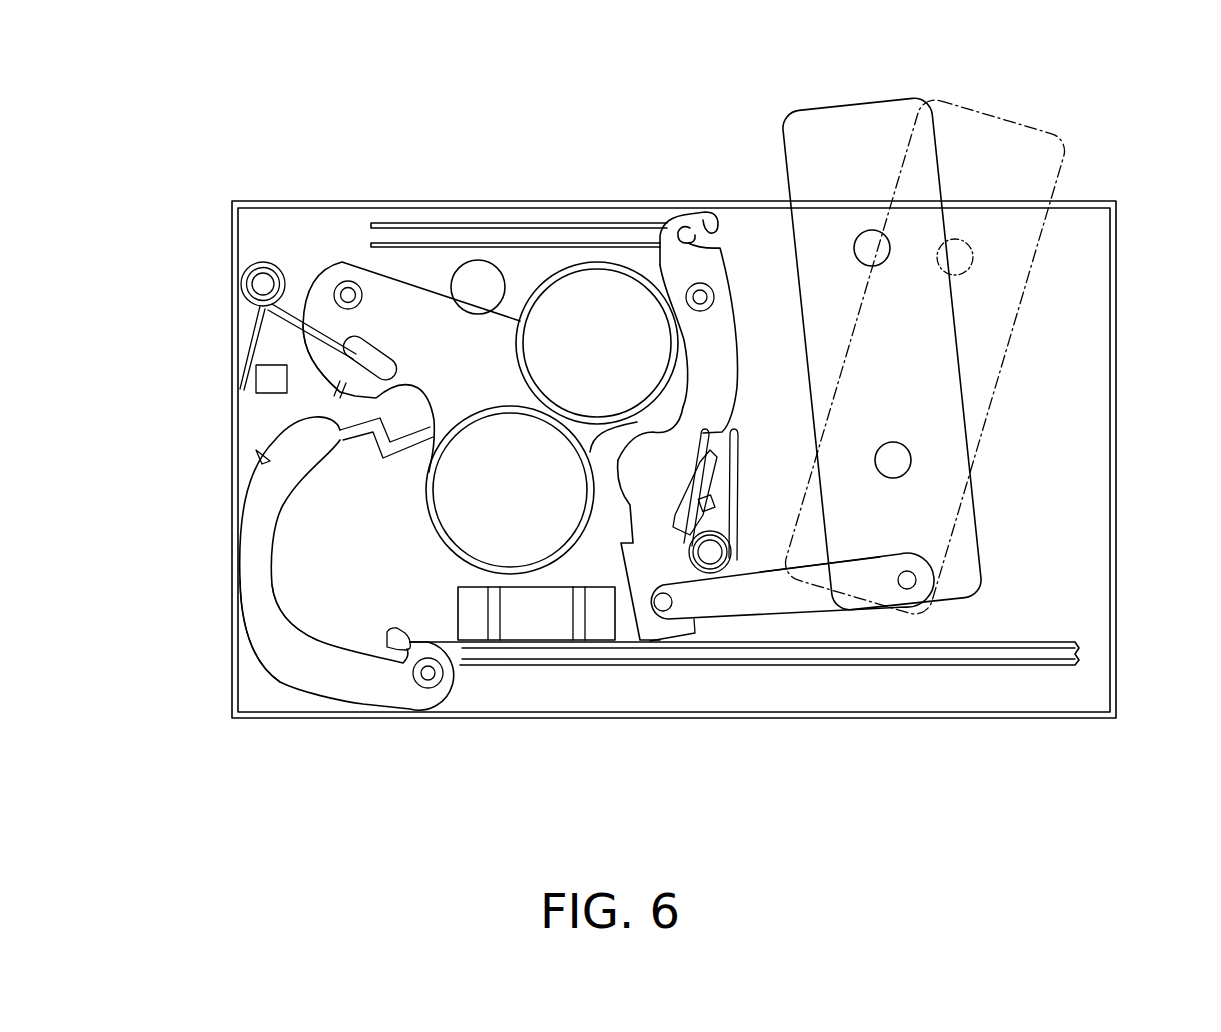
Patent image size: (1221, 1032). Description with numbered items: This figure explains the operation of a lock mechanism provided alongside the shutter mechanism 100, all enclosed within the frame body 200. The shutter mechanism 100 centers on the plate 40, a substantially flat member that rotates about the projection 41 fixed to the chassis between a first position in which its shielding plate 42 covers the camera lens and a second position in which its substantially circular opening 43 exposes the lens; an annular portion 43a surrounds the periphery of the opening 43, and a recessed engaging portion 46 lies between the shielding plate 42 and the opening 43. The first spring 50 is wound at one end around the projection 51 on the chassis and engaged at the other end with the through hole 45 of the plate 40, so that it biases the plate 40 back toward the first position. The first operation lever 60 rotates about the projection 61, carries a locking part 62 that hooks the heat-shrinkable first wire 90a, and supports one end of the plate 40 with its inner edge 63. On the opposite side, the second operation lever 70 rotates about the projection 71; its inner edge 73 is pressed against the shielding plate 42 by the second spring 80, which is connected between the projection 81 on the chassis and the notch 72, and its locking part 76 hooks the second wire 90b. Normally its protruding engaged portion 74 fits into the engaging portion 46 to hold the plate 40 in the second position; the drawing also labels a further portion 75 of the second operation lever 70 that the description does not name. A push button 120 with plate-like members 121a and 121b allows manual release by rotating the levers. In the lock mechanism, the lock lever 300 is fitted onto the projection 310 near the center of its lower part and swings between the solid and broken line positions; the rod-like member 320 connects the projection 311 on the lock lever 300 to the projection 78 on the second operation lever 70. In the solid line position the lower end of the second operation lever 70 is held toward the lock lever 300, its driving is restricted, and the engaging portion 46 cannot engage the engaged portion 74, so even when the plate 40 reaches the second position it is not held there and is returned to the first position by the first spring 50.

The shutter mechanism 100 is at (178, 111).
The frame body 200 is at (1117, 715).
The lock lever 300 is at (920, 319).
The projection 310 is at (895, 460).
The projection 311 is at (907, 592).
The rod-like member 320 is at (740, 600).
The plate 40 is at (411, 351).
The projection 41 is at (347, 282).
The shielding plate 42 is at (573, 363).
The opening 43 is at (514, 412).
The annular portion 43a is at (490, 500).
The through hole 45 is at (355, 360).
The engaging portion 46 is at (487, 553).
The first spring 50 is at (234, 300).
The projection 51 is at (262, 284).
The first operation lever 60 is at (294, 609).
The projection 61 is at (423, 682).
The locking part 62 is at (390, 640).
The inner edge 63 is at (438, 548).
The second operation lever 70 is at (709, 433).
The projection 71 is at (702, 296).
The notch 72 is at (712, 452).
The inner edge 73 is at (610, 497).
The engaged portion 74 is at (640, 424).
The latch bearing surface 75 is at (674, 386).
The locking part 76 is at (707, 213).
The projection 78 is at (663, 606).
The second spring 80 is at (742, 505).
The projection 81 is at (792, 658).
The first wire 90a is at (989, 668).
The second wire 90b is at (553, 221).
The push button 120 is at (536, 717).
The plate-like member 121a is at (478, 617).
The plate-like member 121b is at (600, 618).